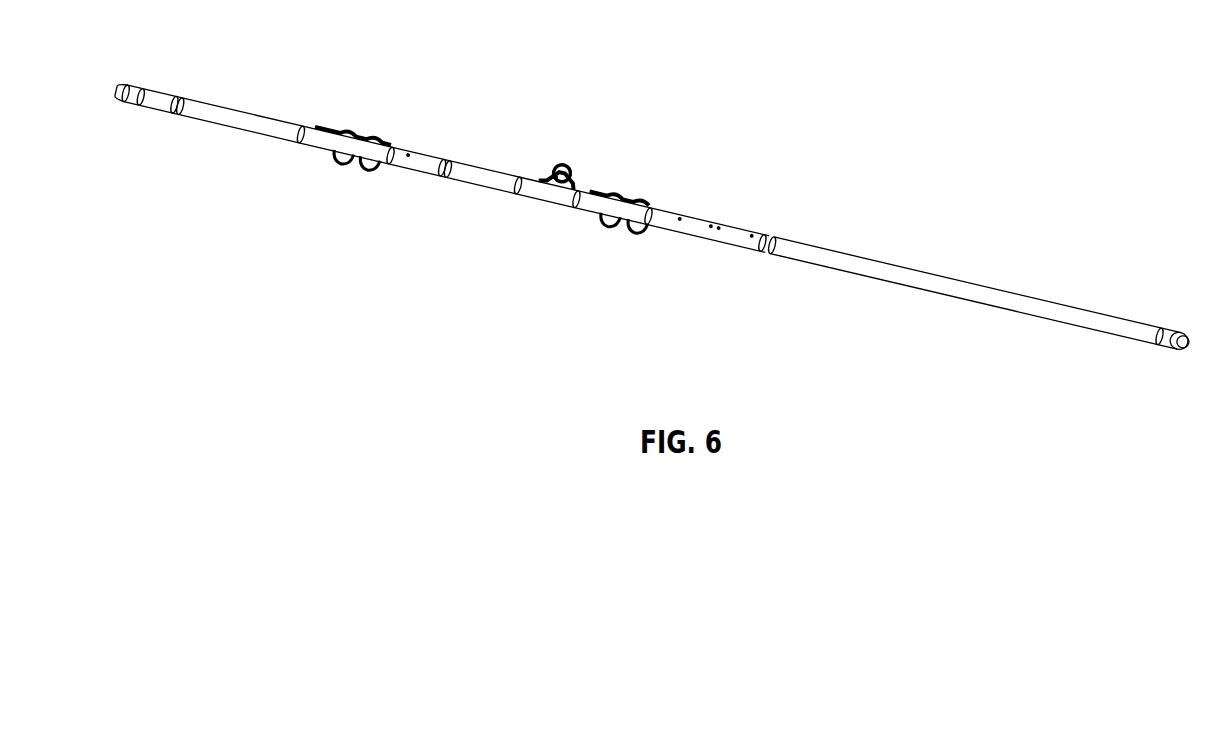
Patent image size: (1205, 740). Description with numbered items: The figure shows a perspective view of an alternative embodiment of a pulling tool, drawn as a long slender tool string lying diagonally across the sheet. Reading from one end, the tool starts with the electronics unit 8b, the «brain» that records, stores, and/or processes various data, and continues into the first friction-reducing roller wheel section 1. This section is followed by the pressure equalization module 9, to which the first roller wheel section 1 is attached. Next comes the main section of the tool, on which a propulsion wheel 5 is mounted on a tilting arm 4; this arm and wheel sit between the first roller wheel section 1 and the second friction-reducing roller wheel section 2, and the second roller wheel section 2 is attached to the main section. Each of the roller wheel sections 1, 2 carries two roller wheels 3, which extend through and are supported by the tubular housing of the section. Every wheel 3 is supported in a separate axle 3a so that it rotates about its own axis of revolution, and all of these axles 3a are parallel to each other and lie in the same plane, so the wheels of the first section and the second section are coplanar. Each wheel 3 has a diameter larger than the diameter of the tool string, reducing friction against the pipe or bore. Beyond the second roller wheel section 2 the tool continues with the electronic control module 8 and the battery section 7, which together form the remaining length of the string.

The first friction-reducing roller wheel section 1 is at (310, 130).
The second friction-reducing roller wheel section 2 is at (630, 203).
The roller wheel 3 is at (368, 170).
The axle 3a is at (340, 166).
The tilting arm 4 is at (547, 175).
The propulsion wheel 5 is at (560, 167).
The battery section 7 is at (872, 268).
The electronic control module 8 is at (697, 230).
The electronics unit 8b is at (259, 122).
The pressure equalization module 9 is at (423, 162).